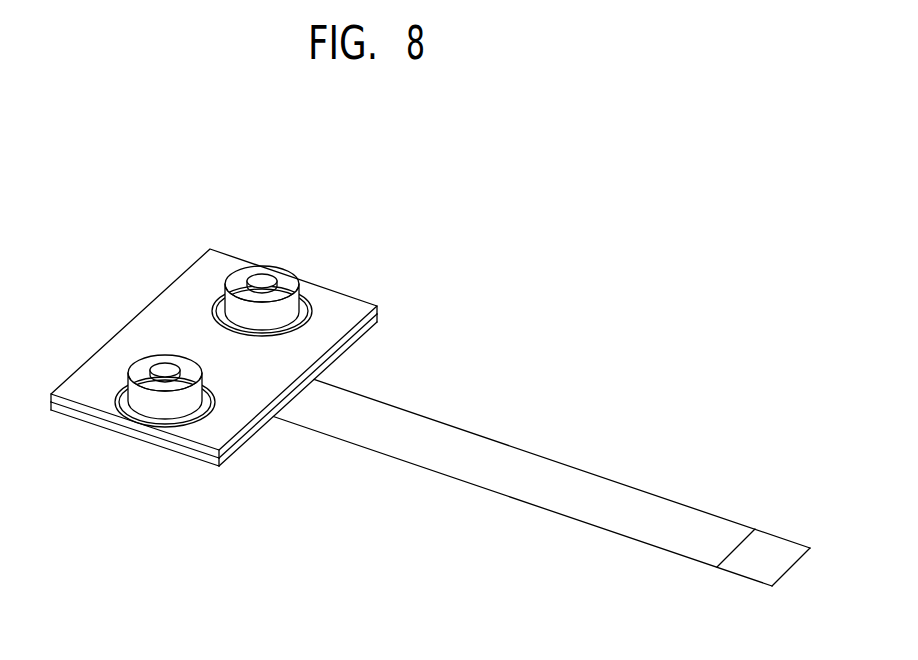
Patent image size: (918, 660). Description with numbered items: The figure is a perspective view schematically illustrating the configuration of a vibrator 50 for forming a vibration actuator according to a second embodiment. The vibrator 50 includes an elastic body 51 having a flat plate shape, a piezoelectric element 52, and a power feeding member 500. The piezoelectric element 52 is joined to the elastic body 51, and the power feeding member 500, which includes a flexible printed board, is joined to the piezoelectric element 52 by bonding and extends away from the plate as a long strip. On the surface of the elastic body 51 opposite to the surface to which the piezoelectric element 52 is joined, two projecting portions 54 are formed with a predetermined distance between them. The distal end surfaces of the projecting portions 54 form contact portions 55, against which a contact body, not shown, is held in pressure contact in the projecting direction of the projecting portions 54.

The vibrator 50 is at (408, 436).
The elastic body 51 is at (93, 400).
The piezoelectric element 52 is at (136, 437).
The power feeding member 500 is at (377, 428).
The projecting portions 54 is at (233, 282).
The contact portions 55 is at (168, 372).